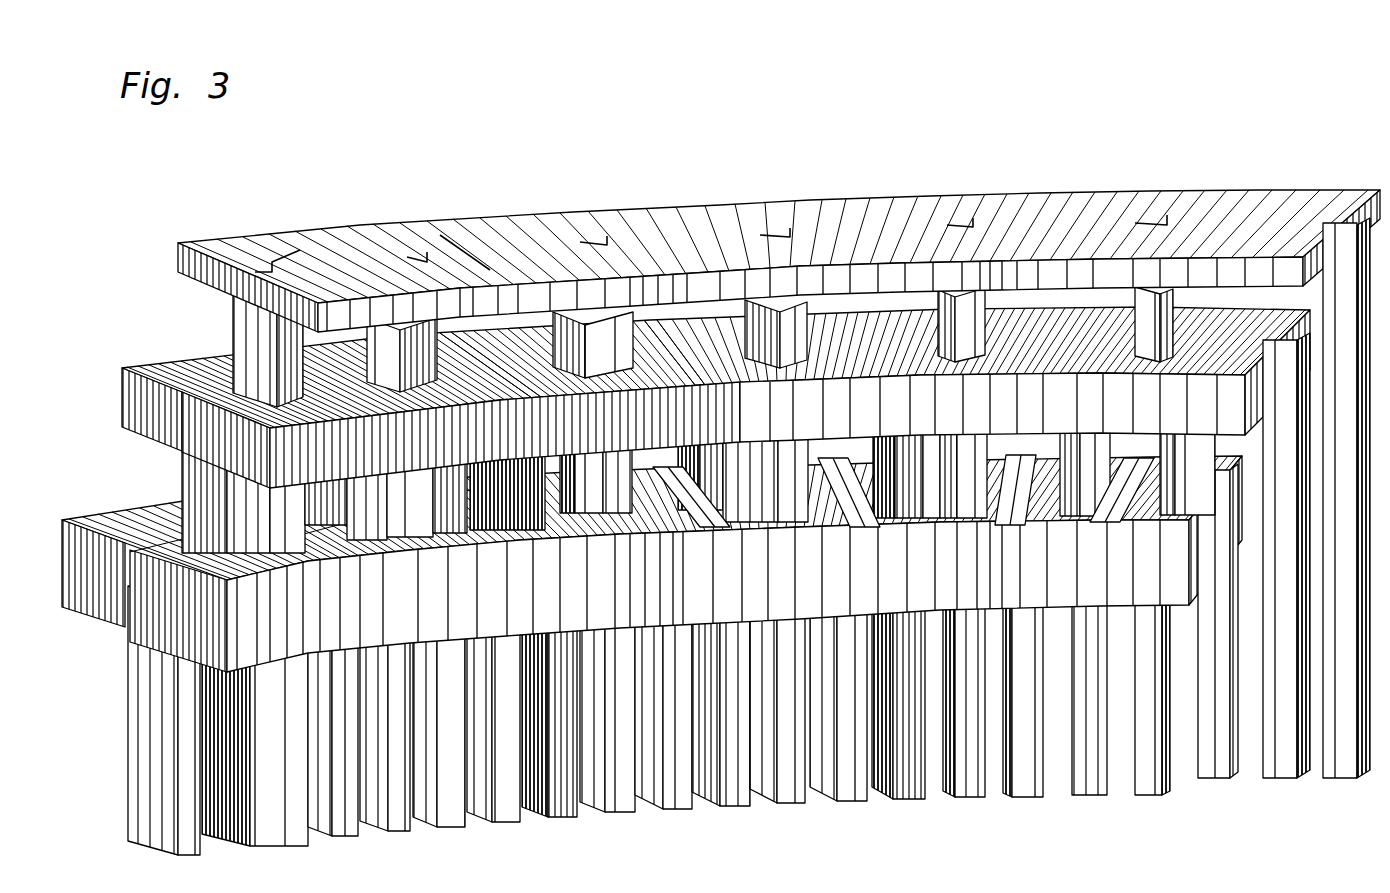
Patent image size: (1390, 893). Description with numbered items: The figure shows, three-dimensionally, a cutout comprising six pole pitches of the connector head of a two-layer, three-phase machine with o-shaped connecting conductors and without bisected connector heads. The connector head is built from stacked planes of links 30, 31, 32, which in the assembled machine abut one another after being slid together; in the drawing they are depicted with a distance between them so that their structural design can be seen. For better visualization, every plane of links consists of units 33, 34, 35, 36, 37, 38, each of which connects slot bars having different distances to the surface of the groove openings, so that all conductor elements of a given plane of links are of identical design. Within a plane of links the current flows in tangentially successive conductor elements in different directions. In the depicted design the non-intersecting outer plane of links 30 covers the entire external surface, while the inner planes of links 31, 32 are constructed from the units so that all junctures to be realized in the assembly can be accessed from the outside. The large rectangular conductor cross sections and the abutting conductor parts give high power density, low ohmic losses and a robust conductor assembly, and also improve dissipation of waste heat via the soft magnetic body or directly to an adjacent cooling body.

The outer plane of links 30 is at (732, 237).
The plane of links 31 is at (690, 315).
The plane of links 32 is at (118, 512).
The unit 33 is at (283, 250).
The unit 34 is at (447, 245).
The unit 35 is at (482, 356).
The unit 36 is at (675, 352).
The unit 37 is at (818, 478).
The unit 38 is at (1010, 475).